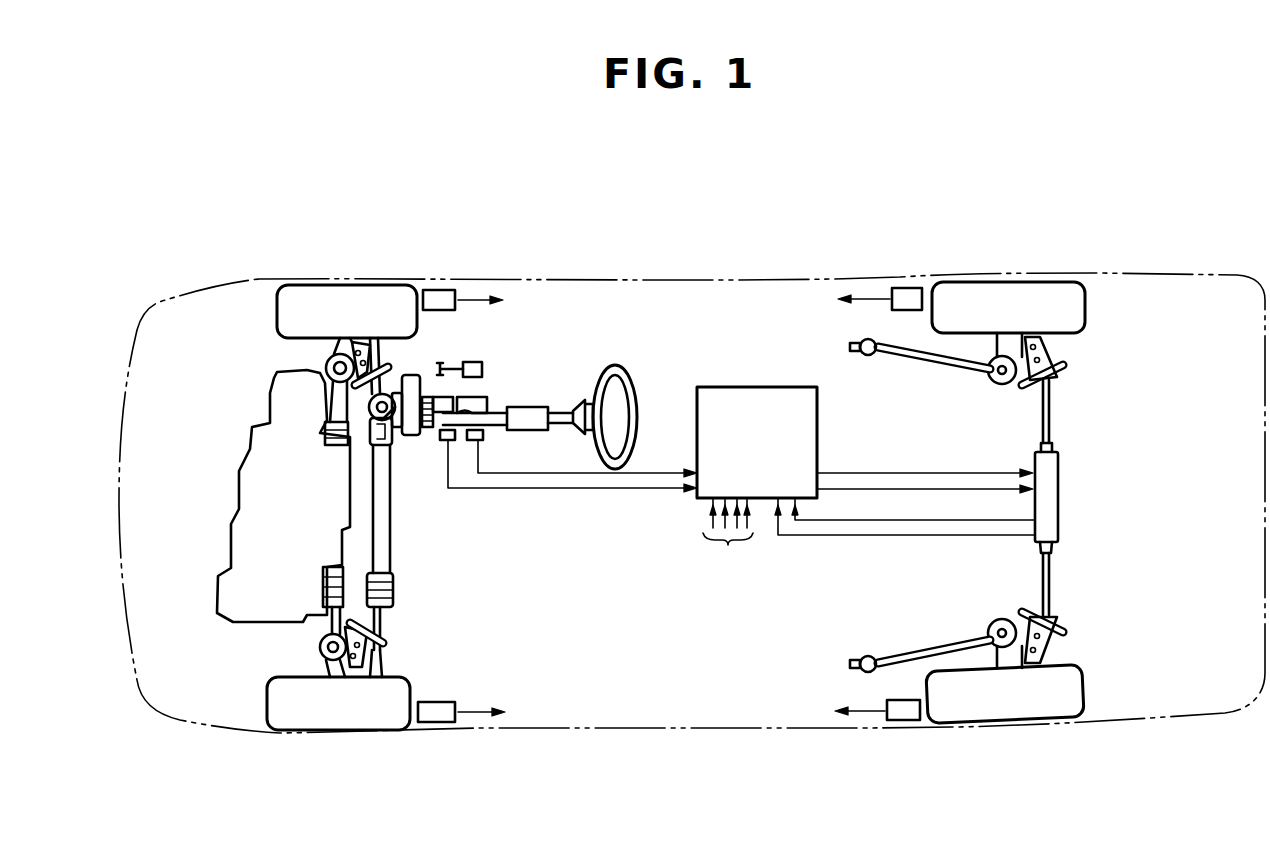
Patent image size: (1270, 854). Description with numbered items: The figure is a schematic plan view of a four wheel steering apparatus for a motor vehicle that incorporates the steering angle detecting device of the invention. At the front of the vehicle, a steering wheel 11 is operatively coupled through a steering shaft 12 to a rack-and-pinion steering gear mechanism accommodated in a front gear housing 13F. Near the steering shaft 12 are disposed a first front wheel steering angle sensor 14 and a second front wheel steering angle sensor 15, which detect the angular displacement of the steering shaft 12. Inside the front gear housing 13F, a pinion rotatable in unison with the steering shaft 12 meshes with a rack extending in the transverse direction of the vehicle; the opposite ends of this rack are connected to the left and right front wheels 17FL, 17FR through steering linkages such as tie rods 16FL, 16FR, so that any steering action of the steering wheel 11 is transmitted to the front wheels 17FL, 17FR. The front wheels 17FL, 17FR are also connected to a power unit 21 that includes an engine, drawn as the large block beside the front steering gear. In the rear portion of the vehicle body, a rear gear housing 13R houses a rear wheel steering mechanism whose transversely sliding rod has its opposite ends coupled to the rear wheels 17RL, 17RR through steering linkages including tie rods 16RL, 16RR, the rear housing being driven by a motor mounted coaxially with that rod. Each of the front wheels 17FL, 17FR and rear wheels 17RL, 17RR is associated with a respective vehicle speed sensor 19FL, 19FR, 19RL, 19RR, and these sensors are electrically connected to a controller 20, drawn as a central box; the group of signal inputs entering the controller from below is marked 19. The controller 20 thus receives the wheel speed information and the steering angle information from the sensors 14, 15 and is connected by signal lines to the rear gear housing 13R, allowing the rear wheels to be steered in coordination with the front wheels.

The steering wheel 11 is at (627, 370).
The steering shaft 12 is at (475, 418).
The front gear housing 13F is at (387, 558).
The rear gear housing 13R is at (1053, 498).
The first front wheel steering angle sensor 14 is at (482, 438).
The second front wheel steering angle sensor 15 is at (438, 440).
The tie rod 16FR is at (383, 350).
The tie rod 16FL is at (378, 630).
The tie rod 16RR is at (1052, 415).
The tie rod 16RL is at (1050, 588).
The right front wheel 17FR is at (363, 298).
The left front wheel 17FL is at (355, 710).
The right rear wheel 17RR is at (1030, 298).
The left rear wheel 17RL is at (1024, 707).
The vehicle speed sensor 19FR is at (445, 297).
The vehicle speed sensor 19FL is at (445, 717).
The vehicle speed sensor 19RR is at (912, 293).
The vehicle speed sensor 19RL is at (903, 720).
The sensor input signals 19 is at (728, 538).
The controller 20 is at (775, 456).
The power unit 21 is at (248, 535).